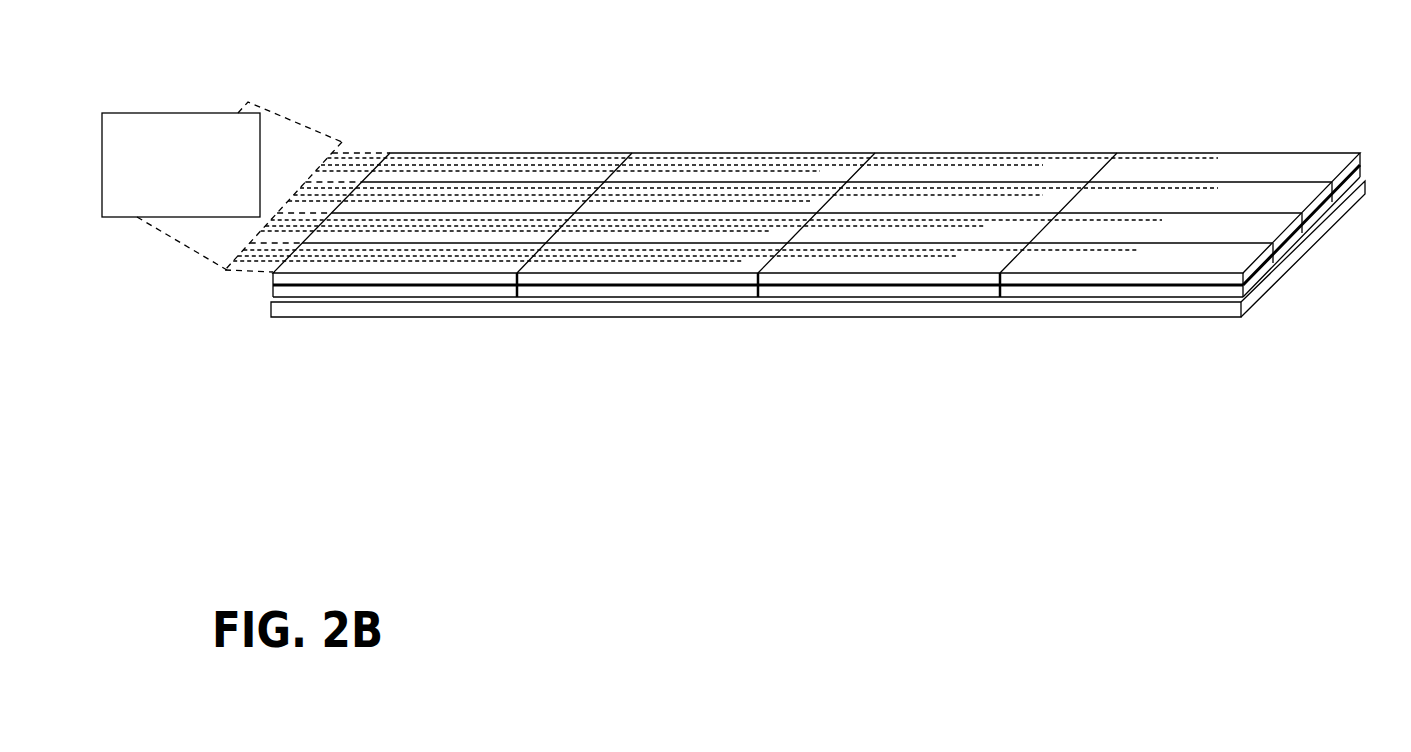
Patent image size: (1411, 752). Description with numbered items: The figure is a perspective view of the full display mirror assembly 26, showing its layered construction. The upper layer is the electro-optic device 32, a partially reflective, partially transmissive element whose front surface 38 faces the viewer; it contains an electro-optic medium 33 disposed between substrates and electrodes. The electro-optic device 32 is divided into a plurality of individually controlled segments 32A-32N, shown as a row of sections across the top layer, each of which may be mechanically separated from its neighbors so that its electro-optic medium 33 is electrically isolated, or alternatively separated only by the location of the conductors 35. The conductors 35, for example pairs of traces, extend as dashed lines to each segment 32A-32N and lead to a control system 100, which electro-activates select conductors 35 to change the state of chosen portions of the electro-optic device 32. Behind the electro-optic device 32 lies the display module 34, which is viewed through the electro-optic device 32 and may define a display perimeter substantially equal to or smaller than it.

The full display mirror assembly 26 is at (1307, 110).
The electro-optic device 32 is at (1255, 173).
The segments 32A-32N is at (918, 173).
The electro-optic medium 33 is at (1283, 256).
The display module 34 is at (1253, 303).
The conductors 35 is at (363, 155).
The front surface 38 is at (527, 170).
The control system 100 is at (160, 208).